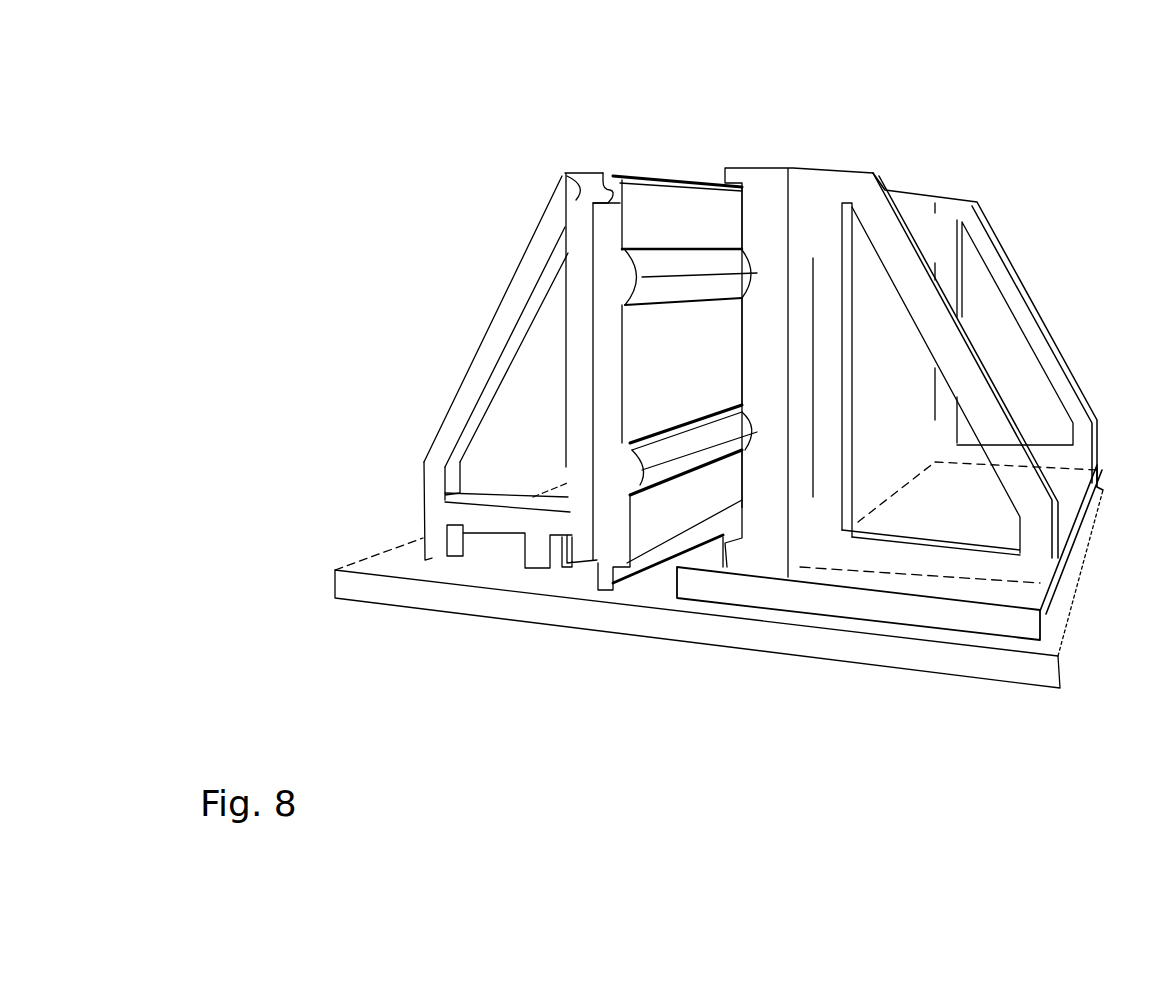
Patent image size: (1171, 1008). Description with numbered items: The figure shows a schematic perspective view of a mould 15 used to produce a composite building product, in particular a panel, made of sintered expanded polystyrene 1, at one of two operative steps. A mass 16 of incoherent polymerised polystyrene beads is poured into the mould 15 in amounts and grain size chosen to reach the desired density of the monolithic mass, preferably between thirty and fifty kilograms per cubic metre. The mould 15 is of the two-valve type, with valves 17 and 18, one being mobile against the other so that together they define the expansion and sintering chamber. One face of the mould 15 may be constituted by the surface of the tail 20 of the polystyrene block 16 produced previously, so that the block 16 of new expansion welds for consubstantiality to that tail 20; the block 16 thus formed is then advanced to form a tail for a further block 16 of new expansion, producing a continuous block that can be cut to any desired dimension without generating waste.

The composite building product made of sintered expanded polystyrene 1 is at (680, 166).
The mould 15 is at (423, 306).
The mass of polystyrene beads / polystyrene block 16 is at (693, 369).
The first valve of the mould 17 is at (762, 197).
The second valve of the mould 18 is at (567, 173).
The tail of the polystyrene block 20 is at (632, 470).